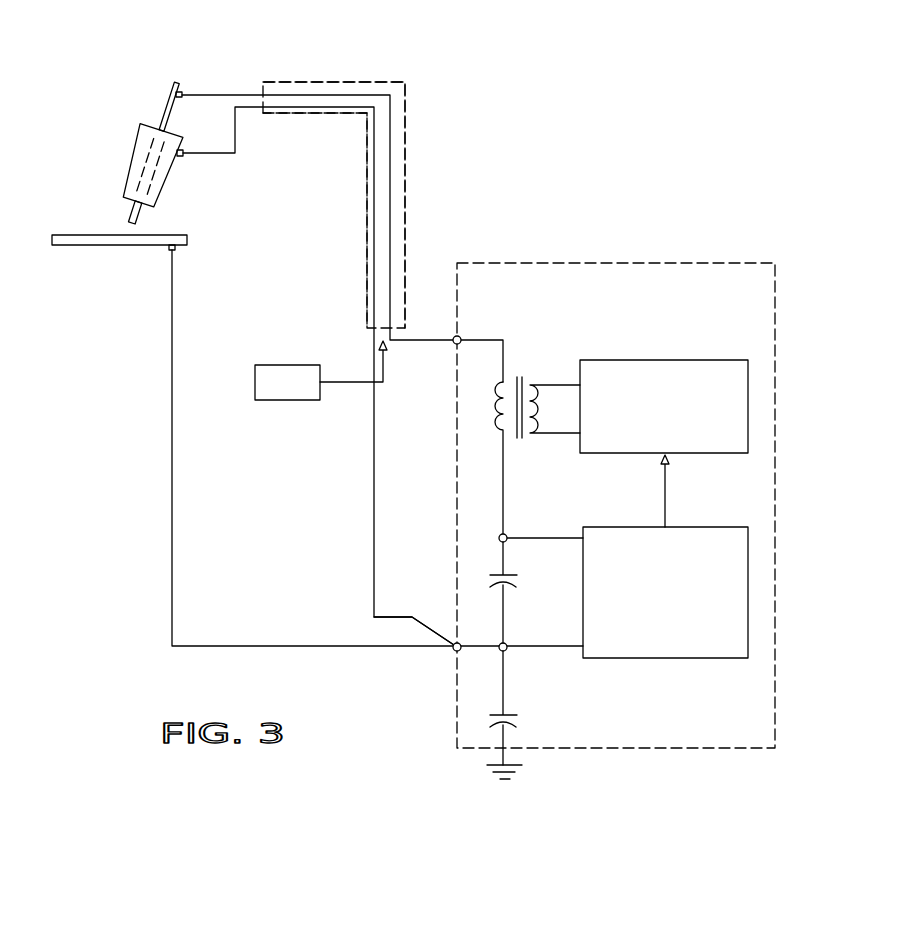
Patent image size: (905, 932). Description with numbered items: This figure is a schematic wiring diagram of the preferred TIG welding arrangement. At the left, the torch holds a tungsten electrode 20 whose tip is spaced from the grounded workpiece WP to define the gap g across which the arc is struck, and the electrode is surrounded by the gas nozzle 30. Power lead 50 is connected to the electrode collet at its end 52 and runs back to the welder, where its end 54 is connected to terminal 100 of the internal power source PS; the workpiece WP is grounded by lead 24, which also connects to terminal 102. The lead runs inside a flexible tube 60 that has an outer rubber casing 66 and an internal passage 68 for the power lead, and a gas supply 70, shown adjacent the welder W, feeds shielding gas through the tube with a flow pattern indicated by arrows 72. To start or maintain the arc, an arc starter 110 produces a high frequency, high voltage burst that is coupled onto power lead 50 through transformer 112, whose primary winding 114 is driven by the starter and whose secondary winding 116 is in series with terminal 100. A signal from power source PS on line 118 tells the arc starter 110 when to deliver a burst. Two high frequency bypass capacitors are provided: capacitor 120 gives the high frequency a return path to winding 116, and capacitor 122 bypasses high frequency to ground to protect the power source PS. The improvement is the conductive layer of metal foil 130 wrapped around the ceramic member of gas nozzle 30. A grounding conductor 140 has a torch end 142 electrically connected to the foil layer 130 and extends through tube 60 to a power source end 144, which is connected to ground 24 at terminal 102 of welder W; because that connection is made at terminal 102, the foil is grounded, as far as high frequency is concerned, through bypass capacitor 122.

The tungsten electrode 20 is at (159, 123).
The gas nozzle 30 is at (159, 165).
The end of power lead 52 is at (183, 94).
The power lead 50 is at (242, 93).
The end of power lead 54 is at (453, 336).
The flexible tube 60 is at (390, 173).
The rubber casing 66 is at (373, 82).
The internal passage 68 is at (404, 122).
The gas supply 70 is at (272, 402).
The gas flow arrows 72 is at (345, 385).
The terminal 100 is at (461, 336).
The terminal 102 is at (453, 655).
The arc starter 110 is at (692, 358).
The transformer 112 is at (508, 413).
The primary winding 114 is at (542, 397).
The secondary winding 116 is at (497, 412).
The line 118 is at (663, 487).
The high frequency bypass capacitor 120 is at (513, 582).
The high frequency bypass capacitor 122 is at (520, 722).
The ground lead 24 is at (517, 775).
The conductive layer of metal foil 130 is at (156, 202).
The grounding conductor 140 is at (373, 472).
The torch end 142 is at (185, 154).
The power source end 144 is at (423, 622).
The welder W is at (700, 263).
The power source PS is at (697, 527).
The workpiece WP is at (83, 243).
The gap g is at (127, 227).